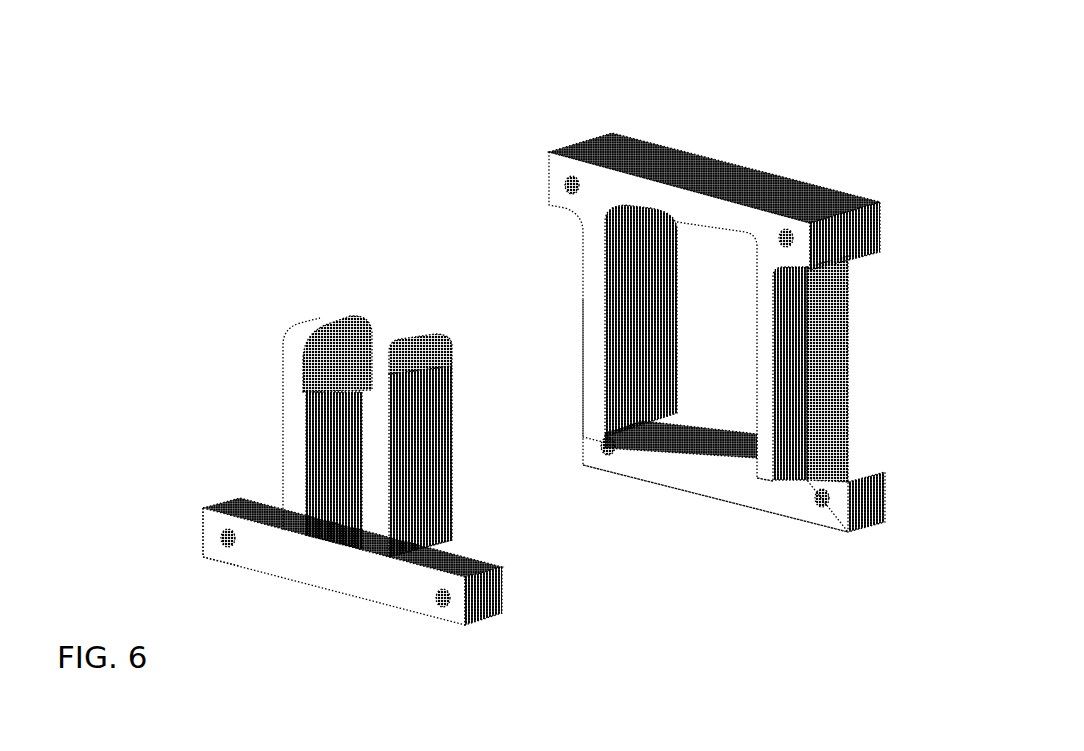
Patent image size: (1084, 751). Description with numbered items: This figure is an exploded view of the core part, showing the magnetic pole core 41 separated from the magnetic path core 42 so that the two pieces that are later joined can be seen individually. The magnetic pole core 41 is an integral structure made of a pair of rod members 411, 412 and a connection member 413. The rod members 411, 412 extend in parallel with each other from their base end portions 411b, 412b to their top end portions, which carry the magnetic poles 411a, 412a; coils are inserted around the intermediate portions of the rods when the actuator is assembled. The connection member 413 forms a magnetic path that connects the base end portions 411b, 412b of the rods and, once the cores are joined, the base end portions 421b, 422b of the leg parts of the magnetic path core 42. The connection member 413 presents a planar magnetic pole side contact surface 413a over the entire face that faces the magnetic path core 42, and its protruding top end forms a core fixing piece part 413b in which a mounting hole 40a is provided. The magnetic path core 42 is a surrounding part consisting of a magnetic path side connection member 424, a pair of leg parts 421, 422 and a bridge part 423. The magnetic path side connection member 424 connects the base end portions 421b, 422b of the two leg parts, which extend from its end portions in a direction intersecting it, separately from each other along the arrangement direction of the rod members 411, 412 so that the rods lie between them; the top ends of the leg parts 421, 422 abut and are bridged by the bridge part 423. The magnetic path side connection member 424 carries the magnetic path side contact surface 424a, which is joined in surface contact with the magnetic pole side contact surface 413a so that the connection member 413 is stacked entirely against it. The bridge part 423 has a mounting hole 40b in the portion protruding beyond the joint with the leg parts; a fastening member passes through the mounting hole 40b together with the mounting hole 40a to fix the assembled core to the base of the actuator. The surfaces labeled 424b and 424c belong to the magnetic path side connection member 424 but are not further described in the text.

The magnetic pole core 41 is at (156, 332).
The rod member 411 is at (300, 412).
The magnetic pole 411a is at (376, 384).
The base end portion 411b is at (293, 520).
The rod member 412 is at (370, 468).
The magnetic pole 412a is at (324, 362).
The base end portion 412b is at (402, 537).
The connection member 413 is at (325, 575).
The magnetic pole side contact surface 413a is at (503, 597).
The core fixing piece part 413b is at (230, 558).
The mounting hole 40a is at (225, 537).
The mounting hole 40b is at (575, 190).
The magnetic path core 42 is at (943, 82).
The leg part 421 is at (606, 287).
The base end portion 421b is at (595, 418).
The leg part 422 is at (800, 337).
The base end portion 422b is at (765, 470).
The bridge part 423 is at (742, 185).
The magnetic path side connection member 424 is at (798, 503).
The magnetic path side contact surface 424a is at (698, 468).
The through hole of bottom base 424b is at (585, 450).
The top surface of bottom base 424c is at (698, 433).